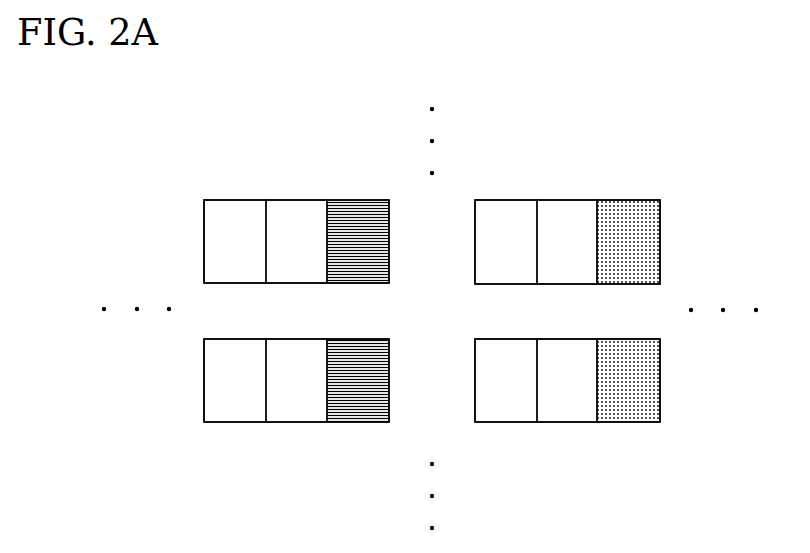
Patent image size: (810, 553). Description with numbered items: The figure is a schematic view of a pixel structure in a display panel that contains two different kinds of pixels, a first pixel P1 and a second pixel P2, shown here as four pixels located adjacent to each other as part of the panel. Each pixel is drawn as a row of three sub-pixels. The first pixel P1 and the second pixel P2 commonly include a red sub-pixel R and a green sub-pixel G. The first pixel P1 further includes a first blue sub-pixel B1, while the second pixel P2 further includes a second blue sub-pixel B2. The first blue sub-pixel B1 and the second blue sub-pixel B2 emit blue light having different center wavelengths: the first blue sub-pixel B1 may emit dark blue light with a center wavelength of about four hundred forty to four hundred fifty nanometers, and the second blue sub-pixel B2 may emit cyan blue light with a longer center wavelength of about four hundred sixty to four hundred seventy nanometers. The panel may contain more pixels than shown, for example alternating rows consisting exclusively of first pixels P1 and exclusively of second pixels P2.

The first pixel P1 is at (298, 200).
The second pixel P2 is at (570, 200).
The red sub-pixel R is at (370, 311).
The green sub-pixel G is at (431, 311).
The first blue sub-pixel B1 is at (358, 311).
The second blue sub-pixel B2 is at (628, 311).